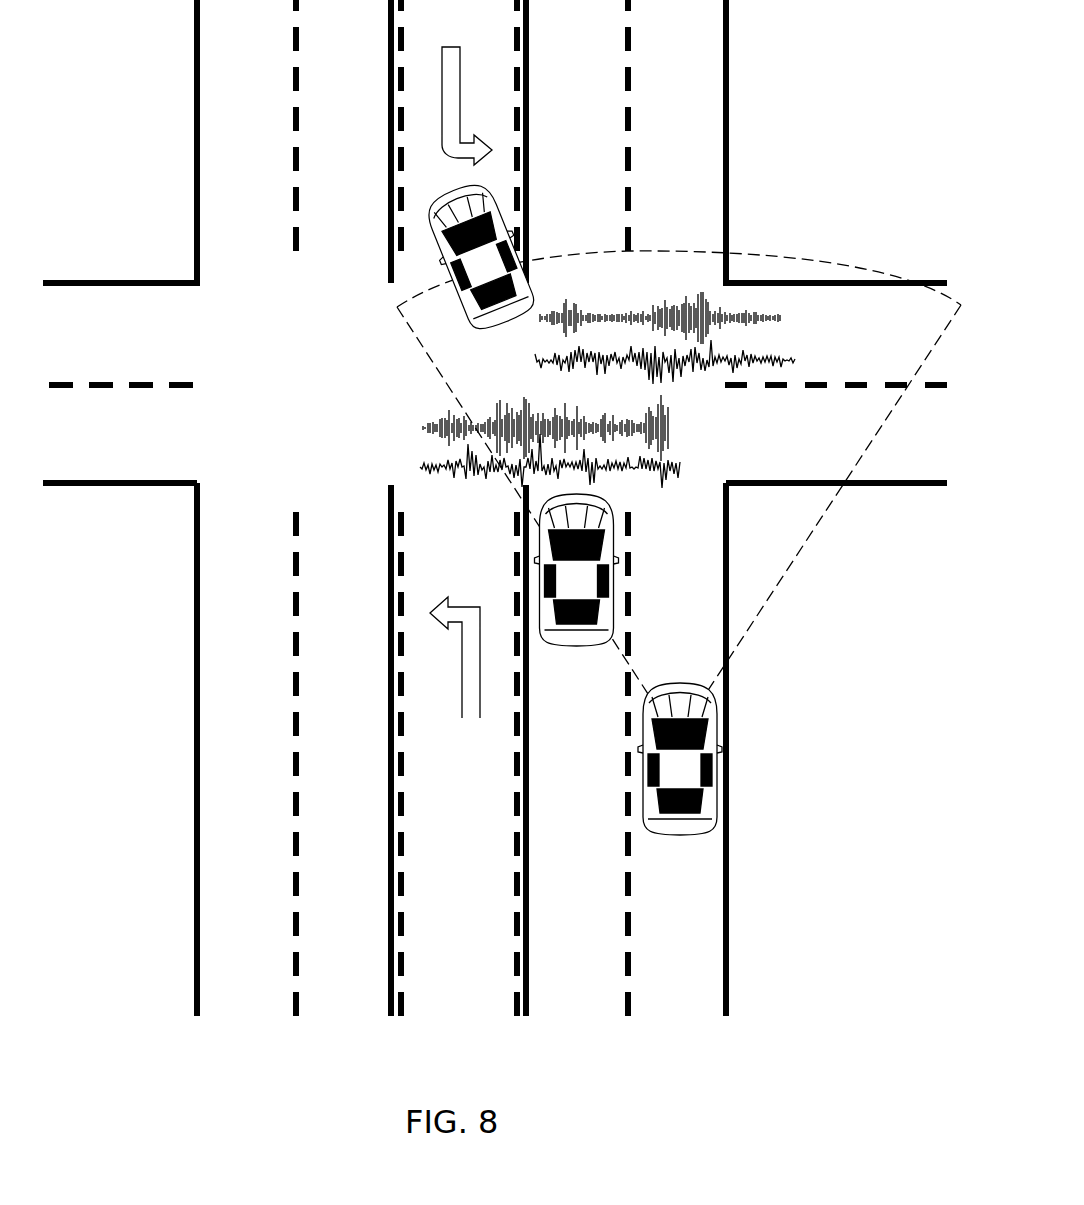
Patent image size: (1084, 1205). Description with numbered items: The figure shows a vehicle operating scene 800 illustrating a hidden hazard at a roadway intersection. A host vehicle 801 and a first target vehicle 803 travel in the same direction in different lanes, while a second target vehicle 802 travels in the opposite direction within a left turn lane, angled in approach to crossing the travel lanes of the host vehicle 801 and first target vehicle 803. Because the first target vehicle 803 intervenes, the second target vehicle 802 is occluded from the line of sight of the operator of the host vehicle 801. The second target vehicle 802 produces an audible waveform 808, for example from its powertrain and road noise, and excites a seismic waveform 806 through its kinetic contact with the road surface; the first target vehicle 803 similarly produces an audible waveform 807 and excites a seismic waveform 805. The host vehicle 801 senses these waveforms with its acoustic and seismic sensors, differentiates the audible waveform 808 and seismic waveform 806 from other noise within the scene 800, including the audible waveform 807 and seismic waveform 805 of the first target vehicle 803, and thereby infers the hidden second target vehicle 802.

The scene 800 is at (858, 83).
The host vehicle 801 is at (655, 835).
The second target vehicle 802 is at (458, 330).
The first target vehicle 803 is at (550, 646).
The seismic waveform 805 is at (420, 426).
The seismic waveform 806 is at (783, 312).
The audible waveform 807 is at (418, 466).
The audible waveform 808 is at (800, 365).